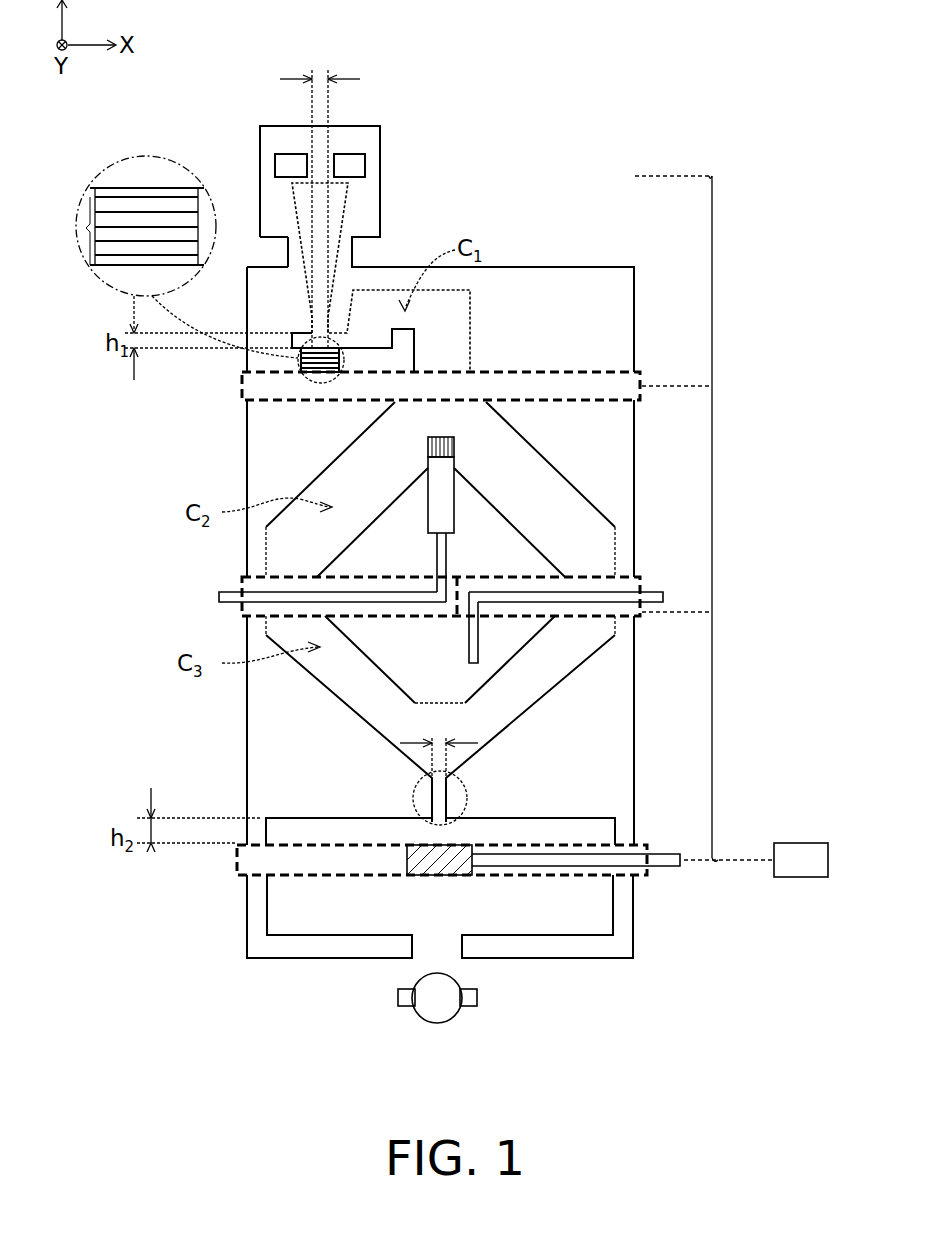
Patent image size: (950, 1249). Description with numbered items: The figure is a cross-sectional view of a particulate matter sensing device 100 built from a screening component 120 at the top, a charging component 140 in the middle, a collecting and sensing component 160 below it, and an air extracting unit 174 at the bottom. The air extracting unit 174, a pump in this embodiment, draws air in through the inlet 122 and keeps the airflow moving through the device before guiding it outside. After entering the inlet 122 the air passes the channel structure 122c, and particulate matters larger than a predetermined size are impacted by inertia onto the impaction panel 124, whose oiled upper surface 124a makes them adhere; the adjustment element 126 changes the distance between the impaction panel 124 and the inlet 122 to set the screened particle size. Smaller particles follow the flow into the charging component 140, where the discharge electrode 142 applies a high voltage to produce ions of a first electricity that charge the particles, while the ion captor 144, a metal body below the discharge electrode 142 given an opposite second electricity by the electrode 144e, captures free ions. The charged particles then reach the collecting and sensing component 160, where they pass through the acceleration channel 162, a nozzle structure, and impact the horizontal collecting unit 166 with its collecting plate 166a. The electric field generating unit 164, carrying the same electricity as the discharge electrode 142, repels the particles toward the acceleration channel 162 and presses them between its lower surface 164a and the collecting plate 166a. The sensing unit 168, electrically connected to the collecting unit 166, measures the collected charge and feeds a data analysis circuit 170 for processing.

The particulate matter sensing device 100 is at (813, 54).
The screening component 120 is at (712, 274).
The inlet 122 is at (321, 176).
The channel structure 122c is at (302, 191).
The impaction panel 124 is at (105, 192).
The upper surface 124a is at (144, 185).
The adjustment element 126 is at (90, 228).
The charging component 140 is at (712, 489).
The discharge electrode 142 is at (428, 443).
The ion captor 144 is at (474, 677).
The electrode 144e is at (658, 587).
The collecting and sensing component 160 is at (712, 731).
The acceleration channel 162 is at (412, 796).
The electric field generating unit 164 is at (338, 727).
The lower surface 164a is at (527, 820).
The collecting unit 166 is at (378, 861).
The collecting plate 166a is at (427, 863).
The sensing unit 168 is at (668, 870).
The data analysis circuit 170 is at (800, 843).
The air extracting unit 174 is at (427, 1002).